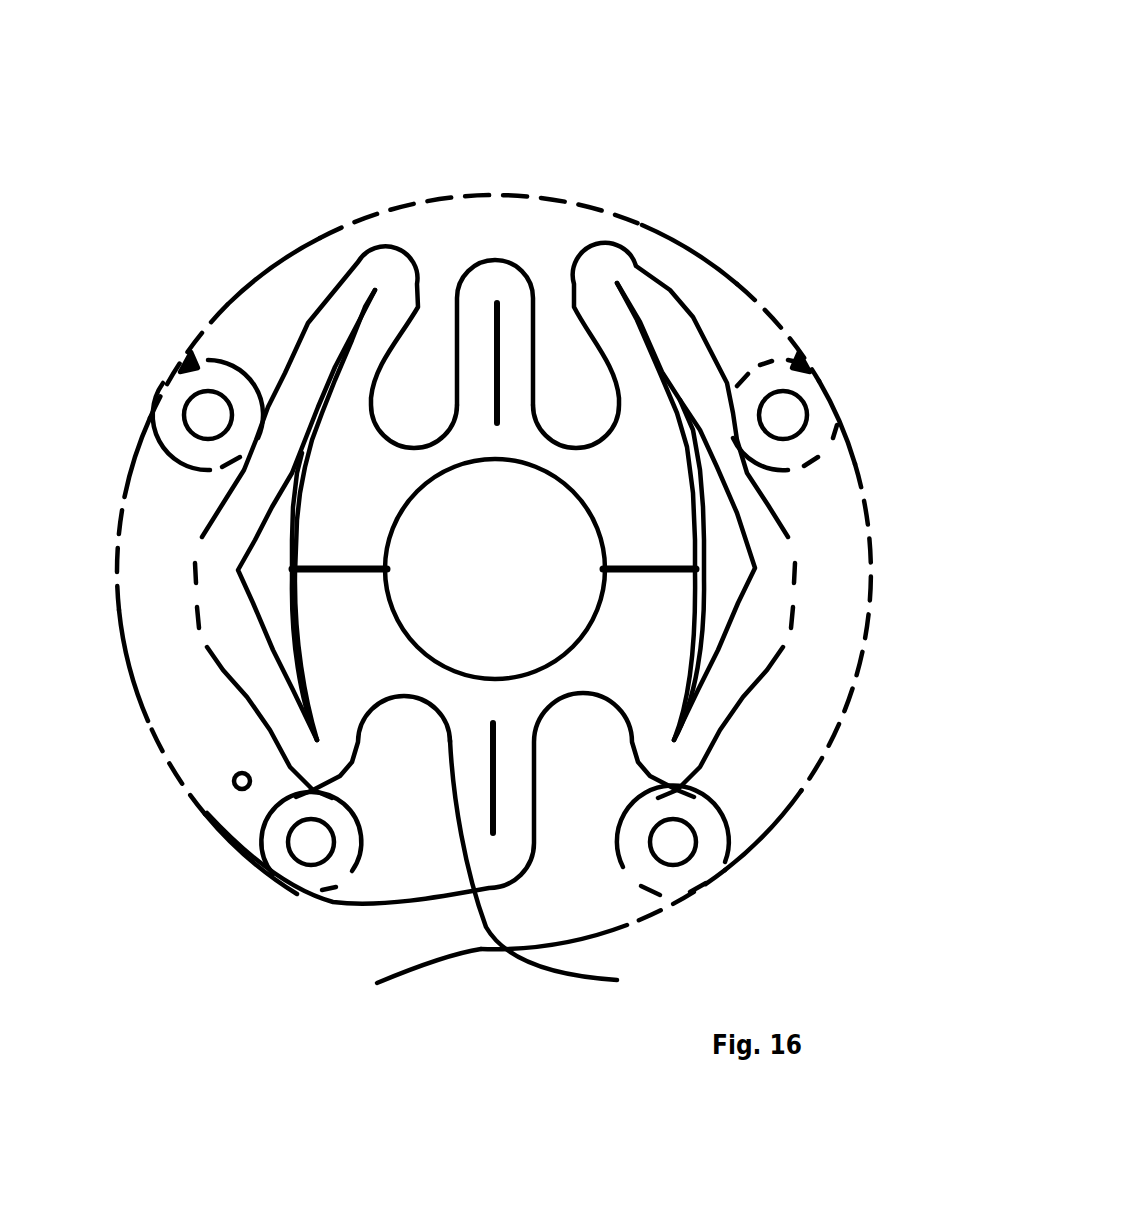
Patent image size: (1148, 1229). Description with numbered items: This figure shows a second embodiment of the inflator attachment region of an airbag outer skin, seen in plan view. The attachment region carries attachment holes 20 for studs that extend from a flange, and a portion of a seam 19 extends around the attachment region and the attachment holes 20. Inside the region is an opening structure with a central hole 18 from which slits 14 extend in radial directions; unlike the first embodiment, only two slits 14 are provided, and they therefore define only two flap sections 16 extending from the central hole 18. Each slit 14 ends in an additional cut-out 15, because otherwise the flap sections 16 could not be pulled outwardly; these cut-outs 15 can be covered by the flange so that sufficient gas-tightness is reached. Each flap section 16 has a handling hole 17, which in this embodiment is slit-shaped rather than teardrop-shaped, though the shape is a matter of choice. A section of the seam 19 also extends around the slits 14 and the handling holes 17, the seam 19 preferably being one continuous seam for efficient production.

The slits 14 is at (882, 757).
The additional cut-outs 15 is at (723, 563).
The flap sections 16 is at (350, 637).
The handling holes 17 is at (494, 768).
The central hole 18 is at (490, 560).
The seam 19 is at (788, 810).
The attachment holes 20 is at (208, 418).